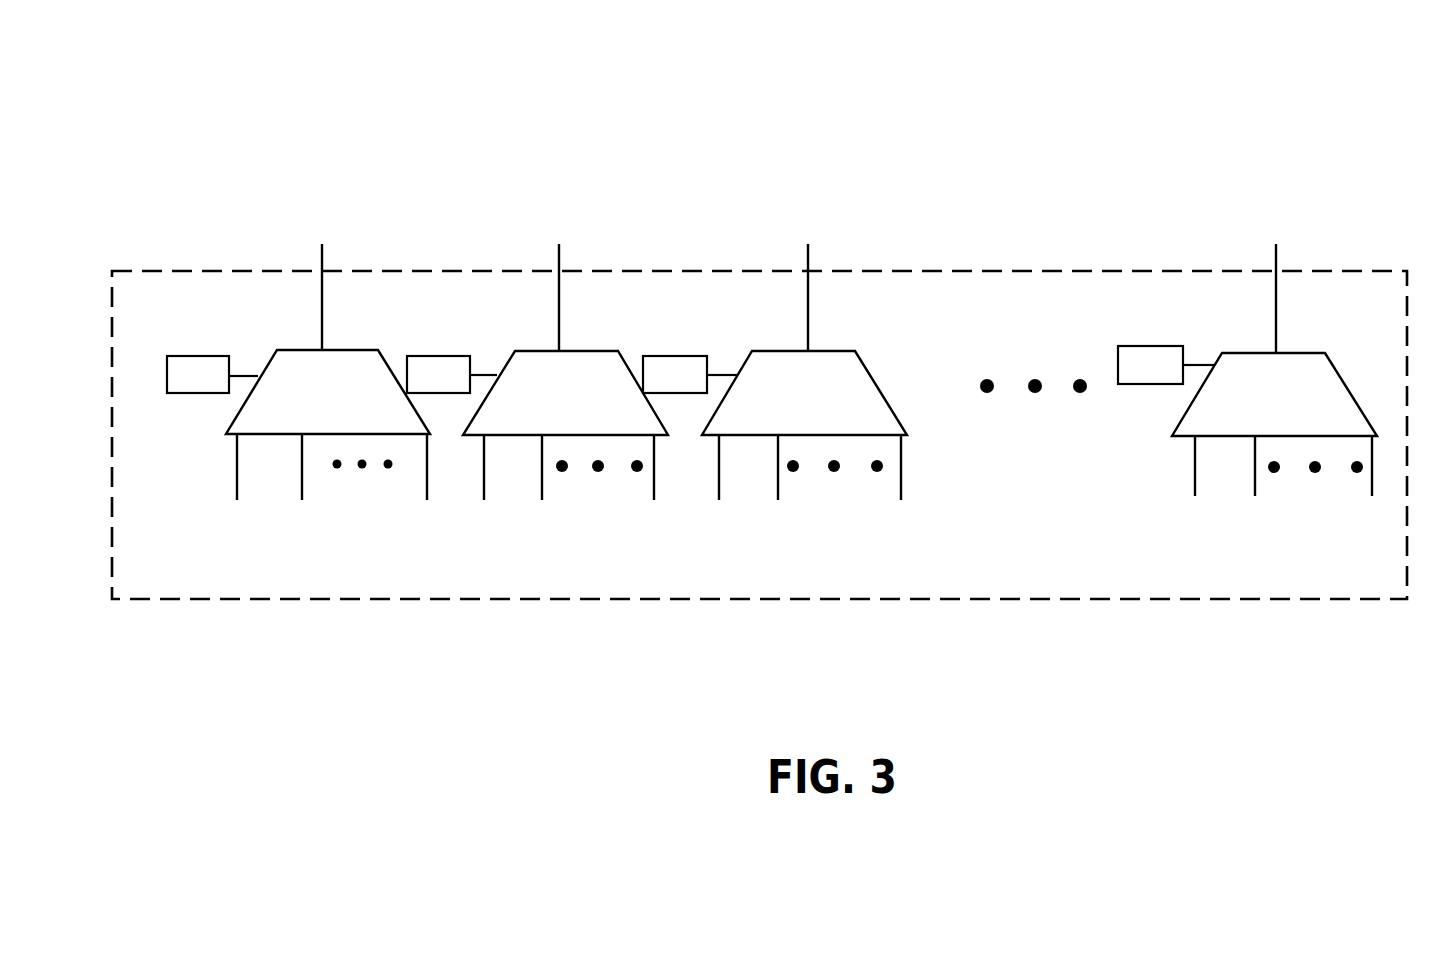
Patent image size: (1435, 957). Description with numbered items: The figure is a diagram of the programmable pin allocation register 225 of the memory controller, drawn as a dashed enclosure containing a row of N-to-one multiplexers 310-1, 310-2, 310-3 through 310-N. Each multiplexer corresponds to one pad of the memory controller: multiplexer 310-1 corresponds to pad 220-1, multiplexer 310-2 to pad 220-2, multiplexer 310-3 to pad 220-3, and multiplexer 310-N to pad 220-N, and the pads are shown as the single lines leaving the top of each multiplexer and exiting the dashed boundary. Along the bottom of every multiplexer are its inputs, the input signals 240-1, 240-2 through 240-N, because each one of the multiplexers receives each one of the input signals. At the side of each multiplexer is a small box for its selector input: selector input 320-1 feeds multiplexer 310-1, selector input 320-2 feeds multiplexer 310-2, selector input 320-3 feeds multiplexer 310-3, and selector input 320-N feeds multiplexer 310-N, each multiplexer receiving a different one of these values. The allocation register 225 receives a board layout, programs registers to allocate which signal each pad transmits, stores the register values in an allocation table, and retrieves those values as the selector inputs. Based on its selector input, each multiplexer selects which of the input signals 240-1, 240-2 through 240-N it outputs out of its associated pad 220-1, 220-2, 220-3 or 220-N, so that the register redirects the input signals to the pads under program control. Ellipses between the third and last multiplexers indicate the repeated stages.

The programmable pin allocation register 225 is at (291, 54).
The pad 220-1 is at (322, 290).
The pad 220-2 is at (559, 293).
The pad 220-3 is at (808, 303).
The pad 220-N is at (1276, 312).
The multiplexer 310-1 is at (328, 409).
The multiplexer 310-2 is at (565, 411).
The multiplexer 310-3 is at (804, 411).
The multiplexer 310-N is at (1274, 413).
The selector input 320-1 is at (212, 374).
The selector input 320-2 is at (452, 374).
The selector input 320-3 is at (690, 374).
The selector input 320-N is at (1166, 365).
The input signal 240-1 is at (714, 487).
The input signal 240-2 is at (788, 487).
The input signal 240-N is at (891, 487).